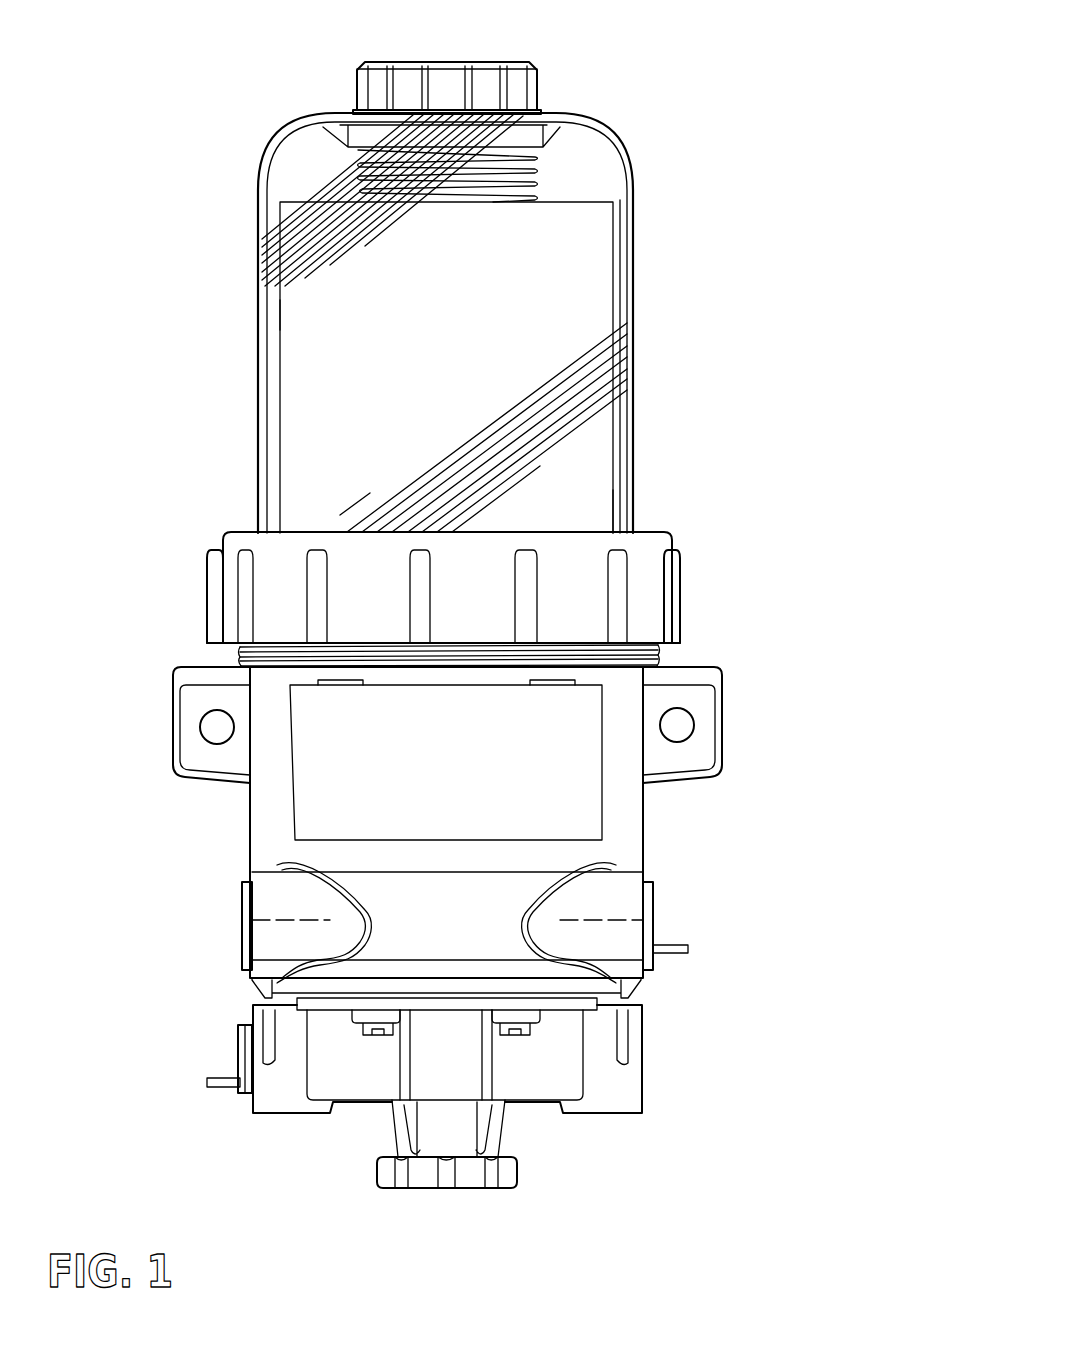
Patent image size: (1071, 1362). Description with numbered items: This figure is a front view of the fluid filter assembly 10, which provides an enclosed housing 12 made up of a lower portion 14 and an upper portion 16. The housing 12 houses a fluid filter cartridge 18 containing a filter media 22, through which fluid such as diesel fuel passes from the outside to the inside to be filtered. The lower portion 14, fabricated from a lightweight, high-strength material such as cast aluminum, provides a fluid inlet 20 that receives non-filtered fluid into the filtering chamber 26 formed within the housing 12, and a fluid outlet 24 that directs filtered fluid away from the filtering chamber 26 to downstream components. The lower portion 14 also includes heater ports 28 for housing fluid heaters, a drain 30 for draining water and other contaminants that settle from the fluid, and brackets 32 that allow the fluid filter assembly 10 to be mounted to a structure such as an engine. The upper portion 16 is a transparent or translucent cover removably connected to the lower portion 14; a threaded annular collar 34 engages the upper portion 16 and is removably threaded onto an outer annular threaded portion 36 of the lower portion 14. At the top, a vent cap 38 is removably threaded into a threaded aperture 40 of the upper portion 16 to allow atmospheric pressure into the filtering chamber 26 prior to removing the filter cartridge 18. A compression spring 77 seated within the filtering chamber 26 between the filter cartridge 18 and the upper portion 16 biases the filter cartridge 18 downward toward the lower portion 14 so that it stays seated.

The fluid filter assembly 10 is at (762, 76).
The housing 12 is at (648, 290).
The lower portion 14 is at (250, 803).
The upper portion 16 is at (257, 395).
The fluid filter cartridge 18 is at (280, 438).
The fluid inlet 20 is at (647, 923).
The filter media 22 is at (287, 322).
The fluid outlet 24 is at (242, 1048).
The filtering chamber 26 is at (620, 512).
The heater ports 28 is at (247, 940).
The drain 30 is at (515, 1173).
The brackets 32 is at (178, 738).
The threaded annular collar 34 is at (675, 603).
The outer annular threaded portion 36 is at (238, 658).
The vent cap 38 is at (525, 86).
The threaded aperture 40 is at (532, 111).
The compression spring 77 is at (527, 173).